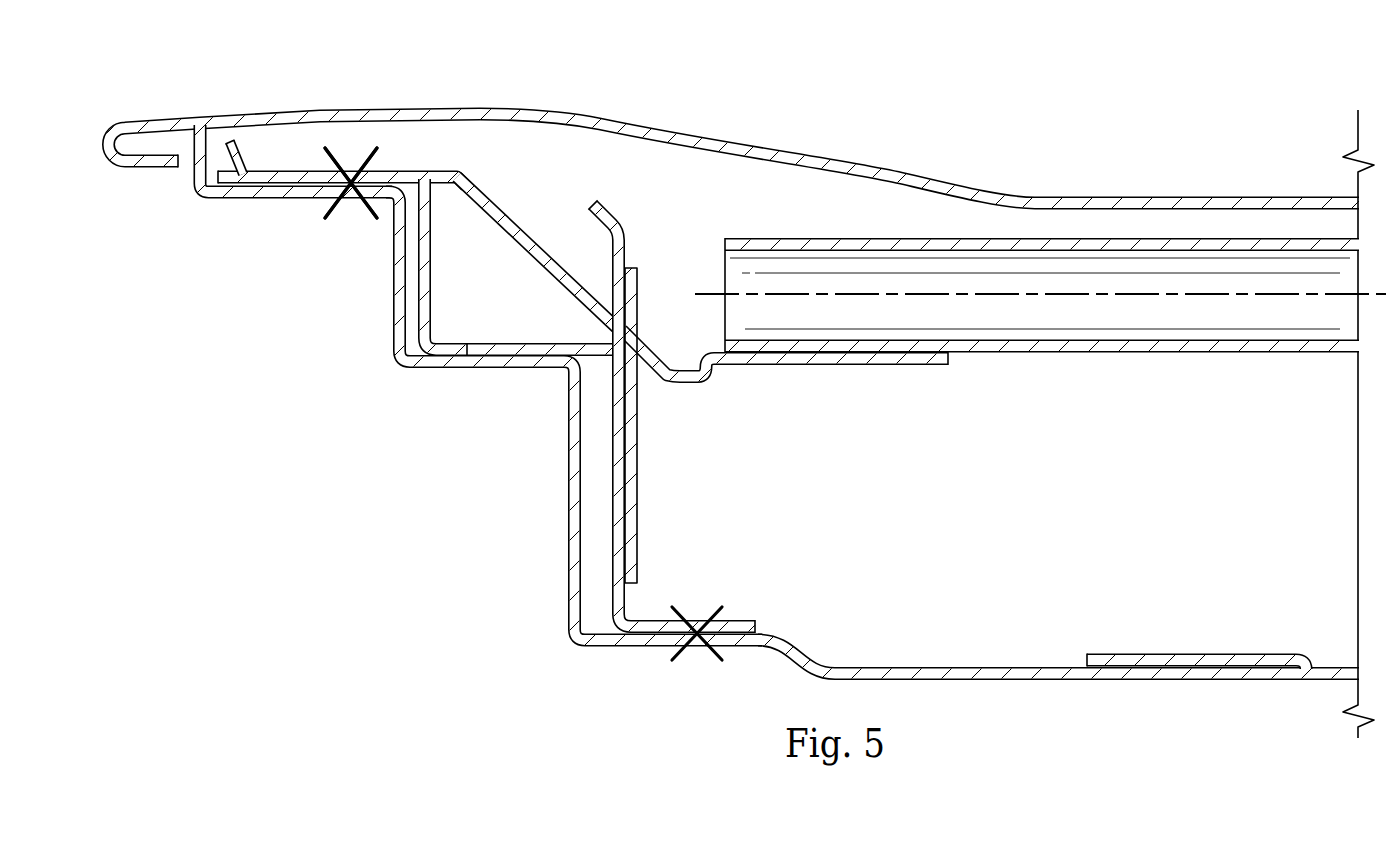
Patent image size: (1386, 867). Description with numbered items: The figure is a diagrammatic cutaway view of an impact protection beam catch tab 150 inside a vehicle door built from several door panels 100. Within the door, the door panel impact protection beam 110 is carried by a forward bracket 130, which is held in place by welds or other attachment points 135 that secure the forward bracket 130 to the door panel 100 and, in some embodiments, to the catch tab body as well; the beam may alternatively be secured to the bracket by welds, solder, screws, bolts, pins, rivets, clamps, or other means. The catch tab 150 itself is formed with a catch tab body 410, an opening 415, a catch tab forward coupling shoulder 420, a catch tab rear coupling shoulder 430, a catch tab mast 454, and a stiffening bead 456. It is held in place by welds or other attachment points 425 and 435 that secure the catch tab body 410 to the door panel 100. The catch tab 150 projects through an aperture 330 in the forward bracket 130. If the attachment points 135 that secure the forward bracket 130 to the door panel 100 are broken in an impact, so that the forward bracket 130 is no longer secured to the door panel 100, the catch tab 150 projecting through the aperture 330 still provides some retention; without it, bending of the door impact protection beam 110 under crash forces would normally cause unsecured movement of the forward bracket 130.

The door panel 100 is at (255, 201).
The door panel impact protection beam 110 is at (1141, 354).
The forward bracket 130 is at (517, 212).
The attachment points 135 is at (350, 168).
The catch tab 150 is at (614, 205).
The aperture 330 is at (596, 307).
The catch tab body 410 is at (403, 368).
The opening 415 is at (480, 352).
The catch tab forward coupling shoulder 420 is at (386, 181).
The attachment point 425 is at (344, 210).
The catch tab rear coupling shoulder 430 is at (741, 620).
The attachment point 435 is at (686, 662).
The catch tab mast 454 is at (616, 462).
The stiffening bead 456 is at (638, 455).